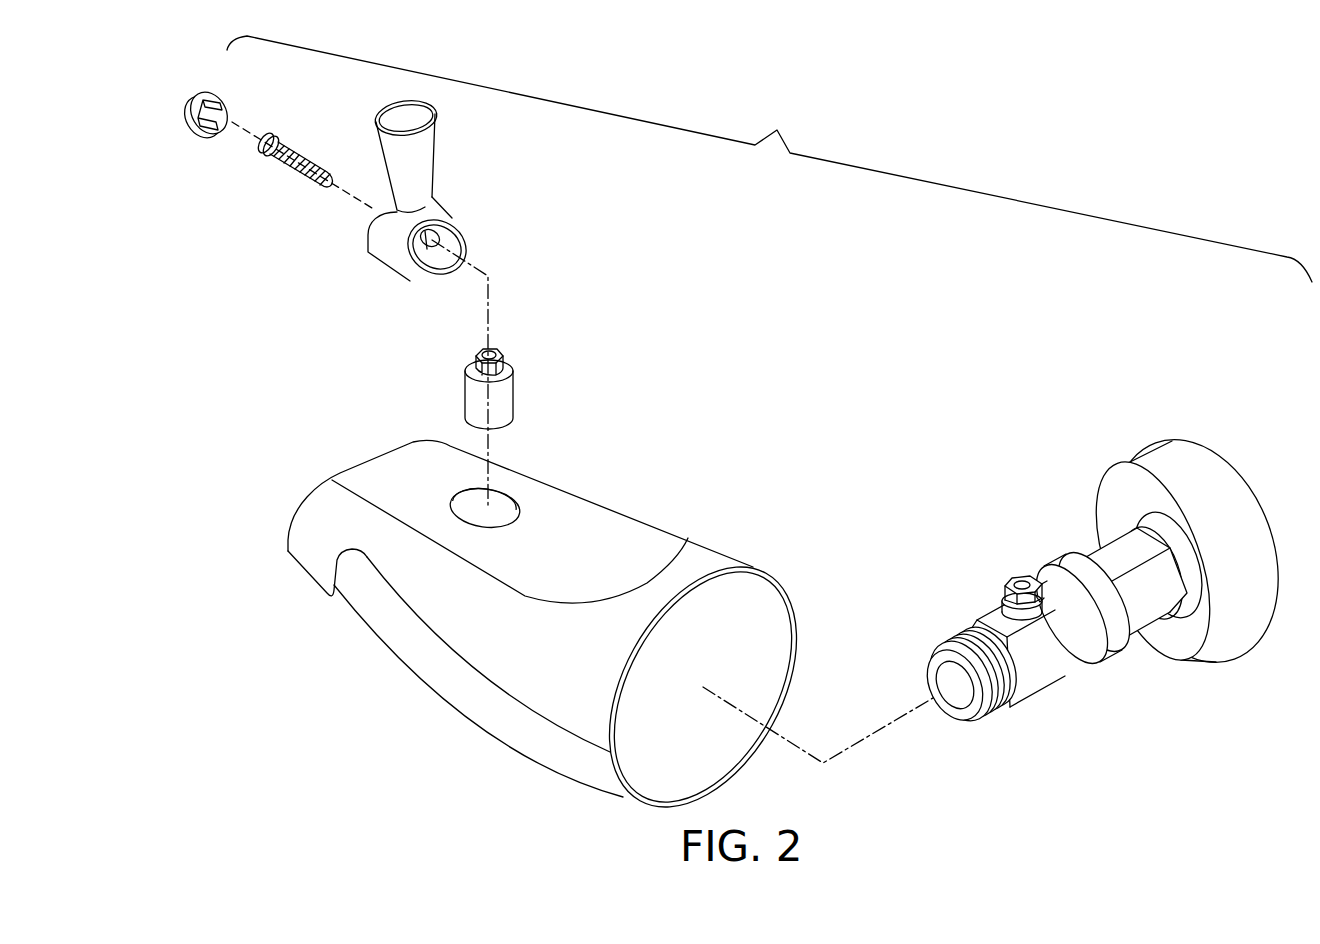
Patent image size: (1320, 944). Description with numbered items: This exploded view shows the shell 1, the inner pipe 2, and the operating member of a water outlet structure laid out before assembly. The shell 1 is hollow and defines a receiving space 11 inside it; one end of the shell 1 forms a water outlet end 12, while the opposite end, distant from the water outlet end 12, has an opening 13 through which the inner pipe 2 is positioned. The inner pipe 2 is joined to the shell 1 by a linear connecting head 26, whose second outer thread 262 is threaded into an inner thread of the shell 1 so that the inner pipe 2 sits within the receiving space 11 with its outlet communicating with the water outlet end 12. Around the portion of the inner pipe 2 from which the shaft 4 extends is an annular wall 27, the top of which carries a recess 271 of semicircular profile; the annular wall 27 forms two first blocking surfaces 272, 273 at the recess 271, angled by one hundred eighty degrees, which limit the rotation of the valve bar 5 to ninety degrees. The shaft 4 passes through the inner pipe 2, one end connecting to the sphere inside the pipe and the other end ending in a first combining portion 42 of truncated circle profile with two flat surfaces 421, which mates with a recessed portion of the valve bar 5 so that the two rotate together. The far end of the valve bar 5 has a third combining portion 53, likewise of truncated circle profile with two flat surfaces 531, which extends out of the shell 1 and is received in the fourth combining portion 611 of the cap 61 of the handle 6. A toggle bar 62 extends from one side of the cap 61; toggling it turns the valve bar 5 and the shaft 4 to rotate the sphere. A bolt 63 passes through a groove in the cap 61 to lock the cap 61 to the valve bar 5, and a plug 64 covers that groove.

The shell 1 is at (602, 510).
The receiving space 11 is at (740, 650).
The water outlet end 12 is at (308, 574).
The opening 13 is at (768, 596).
The inner pipe 2 is at (1134, 628).
The linear connecting head 26 is at (960, 715).
The second outer thread 262 is at (947, 648).
The annular wall 27 is at (1047, 612).
The recess 271 is at (1000, 590).
The first blocking surface 272 is at (1013, 582).
The first blocking surface 273 is at (1022, 618).
The shaft 4 is at (1029, 568).
The first combining portion 42 is at (1003, 606).
The flat surface 421 is at (1040, 600).
The valve bar 5 is at (512, 398).
The third combining portion 53 is at (498, 354).
The flat surface 531 is at (478, 360).
The handle 6 is at (450, 195).
The cap 61 is at (383, 262).
The fourth combining portion 611 is at (437, 240).
The toggle bar 62 is at (434, 140).
The bolt 63 is at (300, 177).
The plug 64 is at (192, 100).